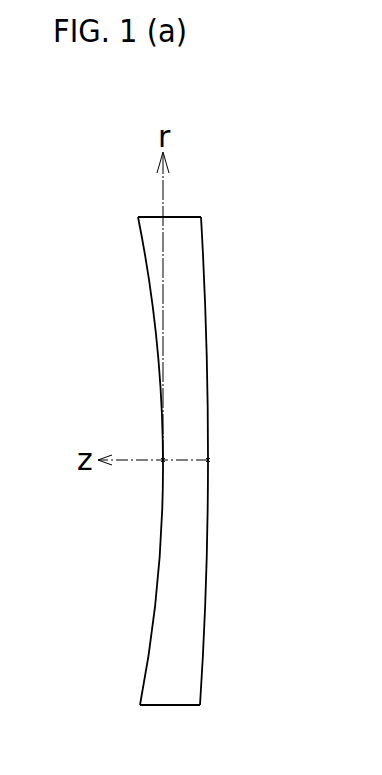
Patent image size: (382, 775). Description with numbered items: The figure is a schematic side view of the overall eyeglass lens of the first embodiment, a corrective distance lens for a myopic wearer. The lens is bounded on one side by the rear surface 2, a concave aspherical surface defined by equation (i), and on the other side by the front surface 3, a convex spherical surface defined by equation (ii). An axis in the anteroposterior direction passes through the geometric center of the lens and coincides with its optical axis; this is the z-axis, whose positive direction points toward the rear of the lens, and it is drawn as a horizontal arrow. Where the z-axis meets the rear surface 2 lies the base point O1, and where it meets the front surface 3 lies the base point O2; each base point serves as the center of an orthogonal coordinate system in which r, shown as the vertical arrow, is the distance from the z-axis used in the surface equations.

The rear surface 2 is at (151, 625).
The front surface 3 is at (204, 626).
The base point on the rear surface O1 is at (163, 460).
The base point on the front surface O2 is at (208, 460).